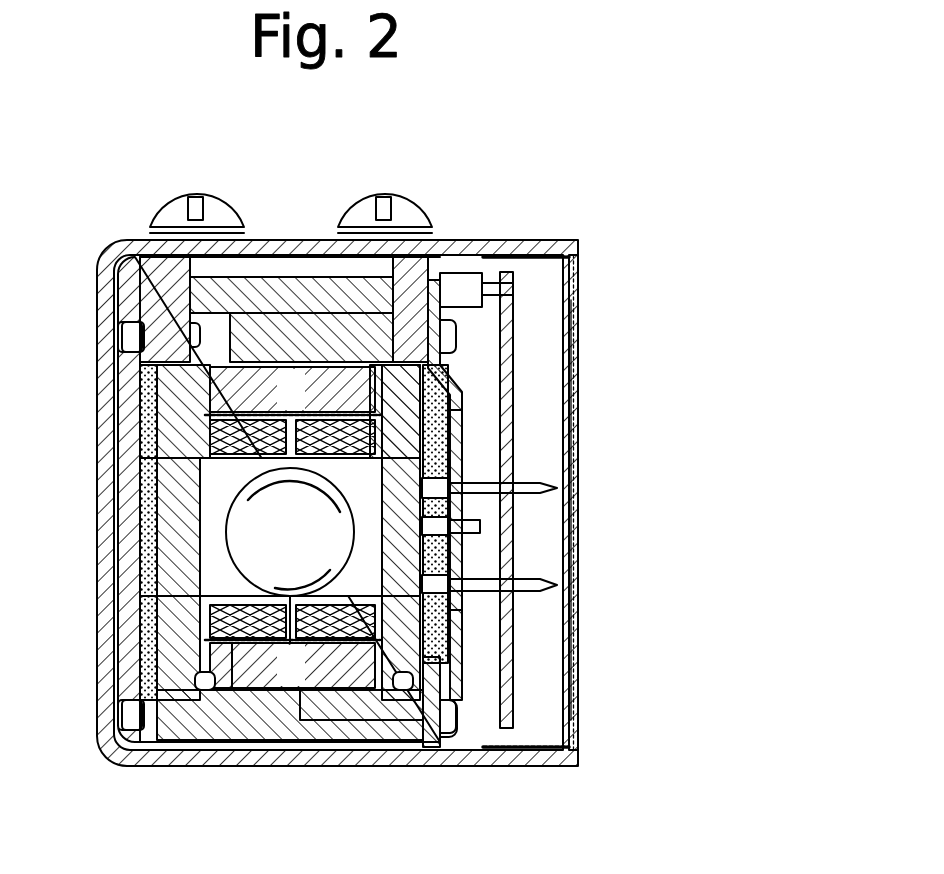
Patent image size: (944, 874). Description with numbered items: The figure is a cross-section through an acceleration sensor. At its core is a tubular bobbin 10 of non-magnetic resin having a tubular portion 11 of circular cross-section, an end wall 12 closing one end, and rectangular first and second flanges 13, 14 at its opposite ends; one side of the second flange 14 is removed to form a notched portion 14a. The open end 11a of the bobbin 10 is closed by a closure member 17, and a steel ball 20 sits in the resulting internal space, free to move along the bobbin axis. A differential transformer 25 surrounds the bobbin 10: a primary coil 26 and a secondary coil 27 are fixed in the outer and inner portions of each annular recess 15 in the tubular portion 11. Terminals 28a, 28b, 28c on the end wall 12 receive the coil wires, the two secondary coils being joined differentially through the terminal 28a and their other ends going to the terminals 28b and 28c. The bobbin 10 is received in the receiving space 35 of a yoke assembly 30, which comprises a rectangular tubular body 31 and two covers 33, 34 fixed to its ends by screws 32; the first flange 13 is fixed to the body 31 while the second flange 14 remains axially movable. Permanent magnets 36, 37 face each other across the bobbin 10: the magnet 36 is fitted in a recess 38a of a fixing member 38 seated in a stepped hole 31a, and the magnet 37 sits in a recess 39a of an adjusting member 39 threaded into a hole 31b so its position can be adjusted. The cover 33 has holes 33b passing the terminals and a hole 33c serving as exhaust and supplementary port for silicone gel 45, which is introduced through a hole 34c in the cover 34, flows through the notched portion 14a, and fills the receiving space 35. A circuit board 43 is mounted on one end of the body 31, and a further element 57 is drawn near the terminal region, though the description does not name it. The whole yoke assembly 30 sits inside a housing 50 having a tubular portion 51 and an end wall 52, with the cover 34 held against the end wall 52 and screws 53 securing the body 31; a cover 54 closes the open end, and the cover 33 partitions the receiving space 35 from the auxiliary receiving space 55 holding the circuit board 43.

The bobbin 10 is at (232, 372).
The tubular portion 11 is at (420, 450).
The open end 11a is at (158, 586).
The end wall 12 is at (458, 560).
The first flange 13 is at (418, 663).
The second flange 14 is at (148, 392).
The notched portion 14a is at (150, 652).
The annular recess 15 is at (205, 690).
The closure member 17 is at (152, 490).
The steel ball 20 is at (250, 540).
The differential transformer 25 is at (312, 416).
The primary coil 26 is at (290, 692).
The secondary coil 27 is at (237, 695).
The terminal 28a is at (480, 527).
The terminal 28b is at (557, 585).
The terminal 28c is at (557, 486).
The yoke assembly 30 is at (125, 252).
The tubular body 31 is at (146, 257).
The stepped hole 31a is at (180, 740).
The hole 31b is at (160, 295).
The screw 32 is at (124, 330).
The cover 33 is at (445, 372).
The hole 33b is at (448, 612).
The hole 33c is at (456, 418).
The cover 34 is at (138, 372).
The hole 34c is at (140, 420).
The receiving space 35 is at (152, 748).
The permanent magnet 36 is at (268, 650).
The permanent magnet 37 is at (402, 300).
The fixing member 38 is at (352, 735).
The recess 38a is at (330, 695).
The adjusting member 39 is at (336, 372).
The recess 39a is at (270, 360).
The circuit board 43 is at (512, 314).
The silicone gel 45 is at (140, 610).
The housing 50 is at (521, 242).
The tubular portion 51 is at (556, 255).
The end wall 52 is at (118, 340).
The screw 53 is at (180, 212).
The cover 54 is at (576, 382).
The auxiliary receiving space 55 is at (515, 288).
The terminal block 57 is at (452, 290).